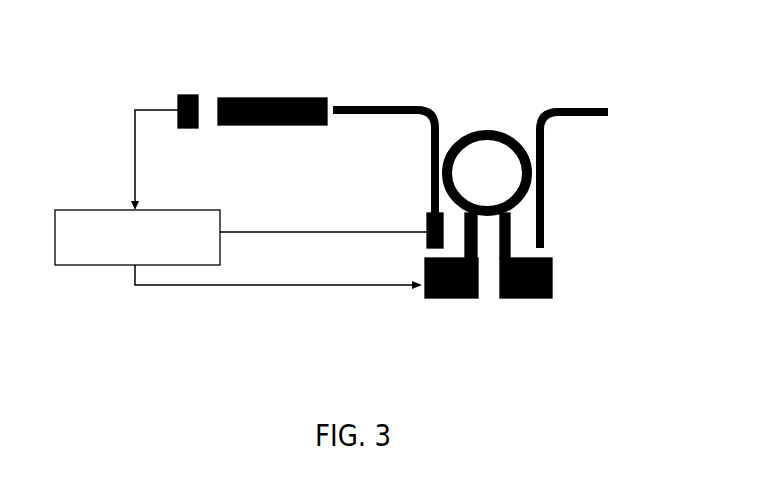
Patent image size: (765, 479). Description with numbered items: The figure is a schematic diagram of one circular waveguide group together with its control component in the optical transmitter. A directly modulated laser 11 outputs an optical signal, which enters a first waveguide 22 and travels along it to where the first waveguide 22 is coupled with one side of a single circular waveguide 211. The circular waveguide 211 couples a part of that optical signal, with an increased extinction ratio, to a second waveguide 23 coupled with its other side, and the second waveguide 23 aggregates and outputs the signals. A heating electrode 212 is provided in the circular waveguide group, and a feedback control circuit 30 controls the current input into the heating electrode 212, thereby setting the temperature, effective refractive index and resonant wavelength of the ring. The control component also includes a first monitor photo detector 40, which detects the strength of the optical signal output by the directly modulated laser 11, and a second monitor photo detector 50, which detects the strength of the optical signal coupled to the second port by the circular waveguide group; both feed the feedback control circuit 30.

The first monitor photo detector 40 is at (183, 93).
The directly modulated laser 11 is at (287, 98).
The first waveguide 22 is at (393, 105).
The circular waveguide 211 is at (478, 130).
The second waveguide 23 is at (545, 122).
The heating electrode 212 is at (552, 262).
The second monitor photo detector 50 is at (424, 240).
The feedback control circuit 30 is at (75, 210).